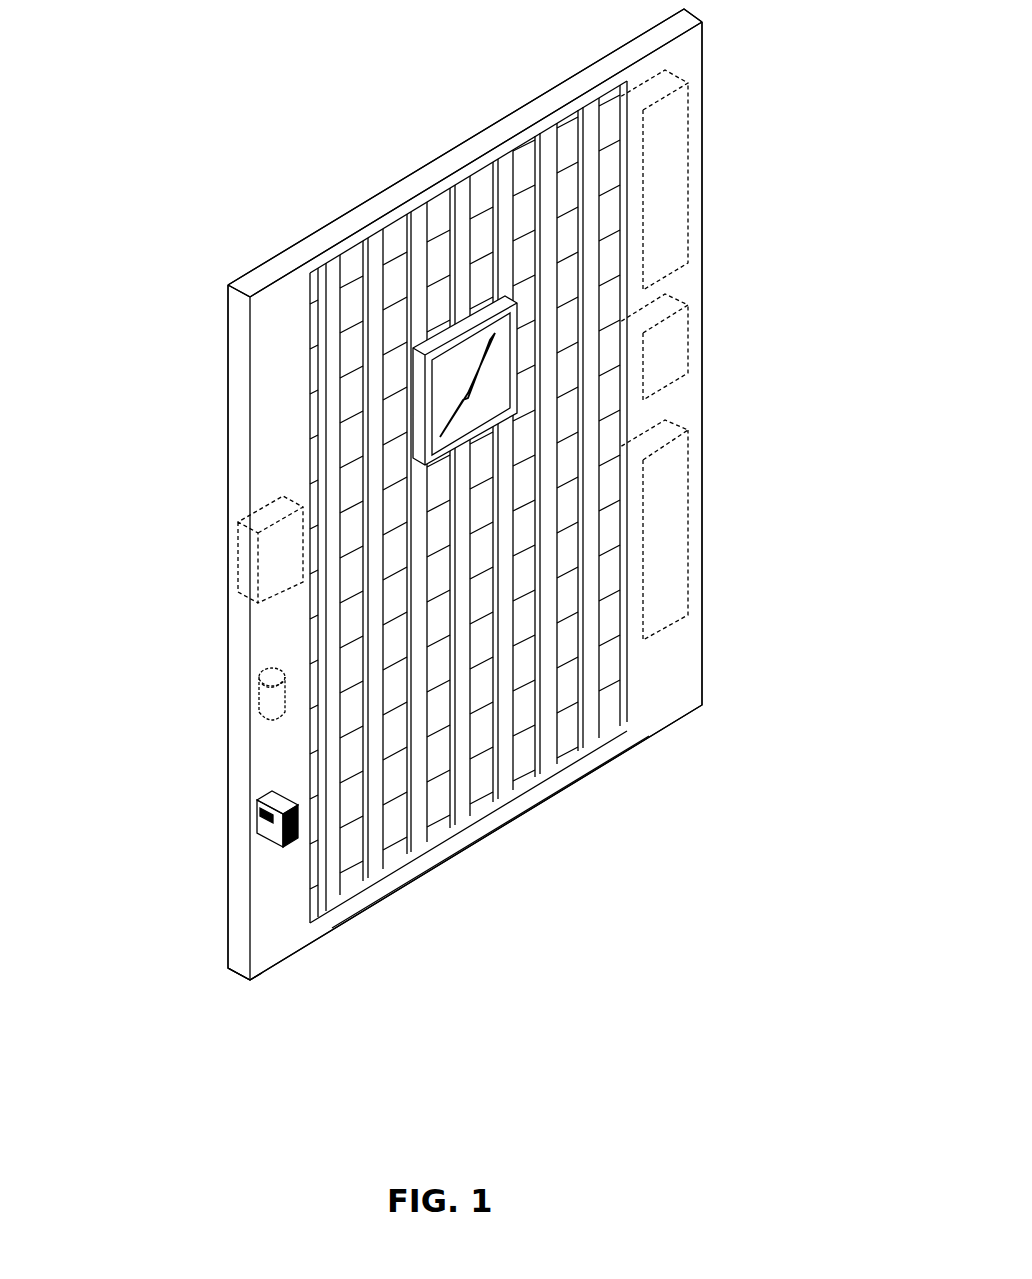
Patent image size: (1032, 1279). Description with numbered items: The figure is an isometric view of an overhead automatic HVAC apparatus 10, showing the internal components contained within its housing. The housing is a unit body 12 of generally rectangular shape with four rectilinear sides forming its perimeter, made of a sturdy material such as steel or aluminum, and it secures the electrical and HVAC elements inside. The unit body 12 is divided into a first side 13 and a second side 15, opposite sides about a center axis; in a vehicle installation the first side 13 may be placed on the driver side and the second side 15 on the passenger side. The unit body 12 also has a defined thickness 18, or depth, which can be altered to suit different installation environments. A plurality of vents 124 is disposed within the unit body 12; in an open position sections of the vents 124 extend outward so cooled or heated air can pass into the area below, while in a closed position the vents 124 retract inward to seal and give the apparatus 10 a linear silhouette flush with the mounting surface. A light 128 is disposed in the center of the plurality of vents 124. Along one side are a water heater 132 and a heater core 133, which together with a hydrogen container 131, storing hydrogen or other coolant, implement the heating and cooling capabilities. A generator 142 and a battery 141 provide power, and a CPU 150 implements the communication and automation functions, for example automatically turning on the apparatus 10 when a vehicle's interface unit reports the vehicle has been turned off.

The overhead automatic HVAC apparatus 10 is at (800, 91).
The unit body 12 is at (618, 44).
The first side 13 is at (700, 740).
The second side 15 is at (211, 469).
The thickness 18 is at (250, 982).
The plurality of vents 124 is at (607, 689).
The light 128 is at (490, 368).
The hydrogen container 131 is at (256, 692).
The water heater 132 is at (663, 163).
The heater core 133 is at (652, 348).
The battery 141 is at (240, 567).
The generator 142 is at (665, 514).
The computing processing unit (CPU) 150 is at (256, 822).